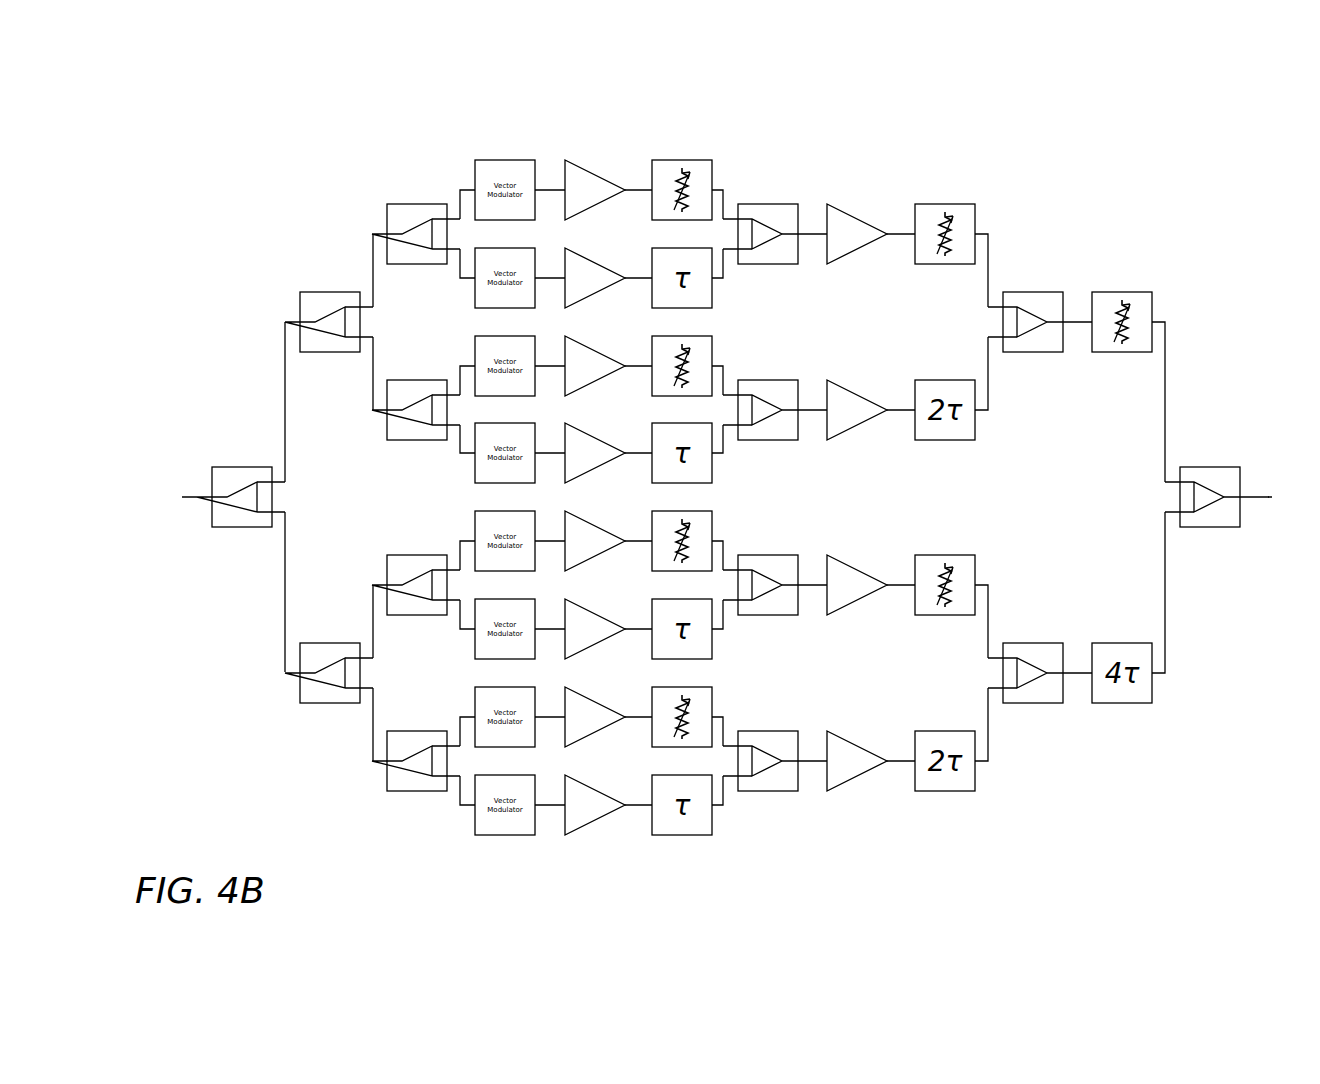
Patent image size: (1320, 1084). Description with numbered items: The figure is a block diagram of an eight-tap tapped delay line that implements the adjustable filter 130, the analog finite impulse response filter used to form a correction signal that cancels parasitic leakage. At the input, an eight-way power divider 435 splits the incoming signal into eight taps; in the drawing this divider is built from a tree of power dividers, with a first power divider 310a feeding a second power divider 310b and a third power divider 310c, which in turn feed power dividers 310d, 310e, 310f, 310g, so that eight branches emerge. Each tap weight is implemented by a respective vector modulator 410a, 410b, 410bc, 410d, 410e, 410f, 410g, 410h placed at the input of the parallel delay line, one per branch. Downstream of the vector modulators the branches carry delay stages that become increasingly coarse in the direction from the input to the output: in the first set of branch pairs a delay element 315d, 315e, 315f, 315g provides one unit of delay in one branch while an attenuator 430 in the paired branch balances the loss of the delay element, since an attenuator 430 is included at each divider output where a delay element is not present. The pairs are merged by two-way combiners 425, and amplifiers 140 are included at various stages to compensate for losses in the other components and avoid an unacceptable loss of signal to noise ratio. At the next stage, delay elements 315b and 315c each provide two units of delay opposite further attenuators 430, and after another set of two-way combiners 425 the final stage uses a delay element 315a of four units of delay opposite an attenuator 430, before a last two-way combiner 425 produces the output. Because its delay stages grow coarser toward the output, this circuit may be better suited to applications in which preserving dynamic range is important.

The adjustable filter 130 is at (1106, 208).
The 8-way power divider 435 is at (457, 158).
The power divider 310a is at (245, 527).
The power divider 310b is at (345, 352).
The power divider 310c is at (345, 703).
The power divider 310d is at (432, 264).
The power divider 310e is at (432, 440).
The power divider 310f is at (432, 615).
The power divider 310g is at (432, 791).
The vector modulator 410a is at (516, 160).
The vector modulator 410b is at (517, 308).
The vector modulator 410bc is at (517, 396).
The vector modulator 410d is at (517, 483).
The vector modulator 410e is at (517, 571).
The vector modulator 410f is at (517, 659).
The vector modulator 410g is at (517, 747).
The vector modulator 410h is at (506, 835).
The attenuator 430 is at (681, 160).
The delay element 315a is at (1127, 643).
The delay element 315b is at (952, 440).
The delay element 315c is at (952, 791).
The delay element 315d is at (680, 308).
The delay element 315e is at (680, 483).
The delay element 315f is at (680, 659).
The delay element 315g is at (682, 835).
The two-way combiner 425 is at (770, 264).
The amplifier 140 is at (858, 219).